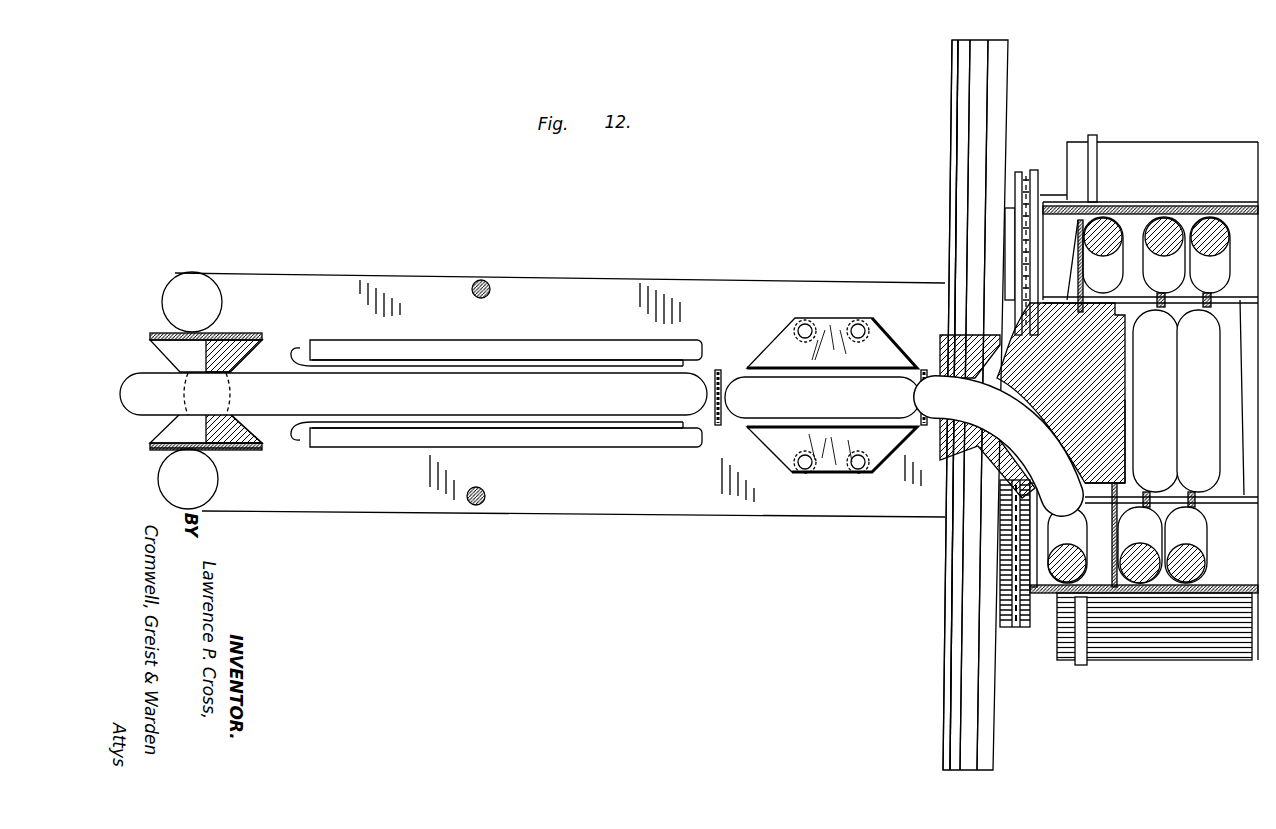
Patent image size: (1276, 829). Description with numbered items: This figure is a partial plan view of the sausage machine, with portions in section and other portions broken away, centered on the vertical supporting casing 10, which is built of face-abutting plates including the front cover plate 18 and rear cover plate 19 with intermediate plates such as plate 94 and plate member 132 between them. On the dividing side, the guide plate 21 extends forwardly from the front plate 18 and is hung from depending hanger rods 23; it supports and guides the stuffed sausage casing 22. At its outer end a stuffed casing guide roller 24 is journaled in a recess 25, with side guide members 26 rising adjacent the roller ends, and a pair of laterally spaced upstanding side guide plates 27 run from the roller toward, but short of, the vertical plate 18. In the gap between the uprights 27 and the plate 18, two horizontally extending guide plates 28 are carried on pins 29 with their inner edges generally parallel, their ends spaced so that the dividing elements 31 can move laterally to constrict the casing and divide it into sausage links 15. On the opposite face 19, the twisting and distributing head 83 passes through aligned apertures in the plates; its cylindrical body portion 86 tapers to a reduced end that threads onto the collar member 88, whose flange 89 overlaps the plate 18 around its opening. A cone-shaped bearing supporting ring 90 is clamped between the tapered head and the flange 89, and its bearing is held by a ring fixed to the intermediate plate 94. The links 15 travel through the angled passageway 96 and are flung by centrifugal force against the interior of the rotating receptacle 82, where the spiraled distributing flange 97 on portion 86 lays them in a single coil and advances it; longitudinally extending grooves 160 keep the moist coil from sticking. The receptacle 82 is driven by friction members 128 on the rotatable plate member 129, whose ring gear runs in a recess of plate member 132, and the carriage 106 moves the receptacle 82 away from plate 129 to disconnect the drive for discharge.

The vertical supporting casing 10 is at (952, 40).
The sausage links 15 is at (1217, 526).
The front cover plate 18 is at (952, 131).
The rear cover plate 19 is at (1008, 65).
The guide plate 21 is at (609, 512).
The stuffed sausage casing 22 is at (272, 380).
The hanger rods 23 is at (483, 280).
The stuffed casing guide roller 24 is at (167, 345).
The recess 25 is at (250, 450).
The side guide members 26 is at (190, 285).
The upstanding side guide plates 27 is at (425, 357).
The horizontally extending guide plates 28 is at (832, 396).
The pins 29 is at (797, 323).
The dividing elements 31 is at (719, 370).
The receptacle 82 is at (1237, 230).
The twisting and distributing head 83 is at (1112, 388).
The cylindrical body portion 86 is at (1108, 440).
The collar member 88 is at (943, 462).
The flange 89 is at (945, 340).
The bearing supporting ring 90 is at (1012, 470).
The intermediate plate 94 is at (958, 194).
The passageway 96 is at (1090, 478).
The distributing flange 97 is at (1083, 272).
The carriage 106 is at (1207, 152).
The friction members 128 is at (1018, 625).
The rotatable plate member 129 is at (995, 577).
The intermediate plate member 132 is at (965, 615).
The longitudinally extending grooves 160 is at (1238, 401).